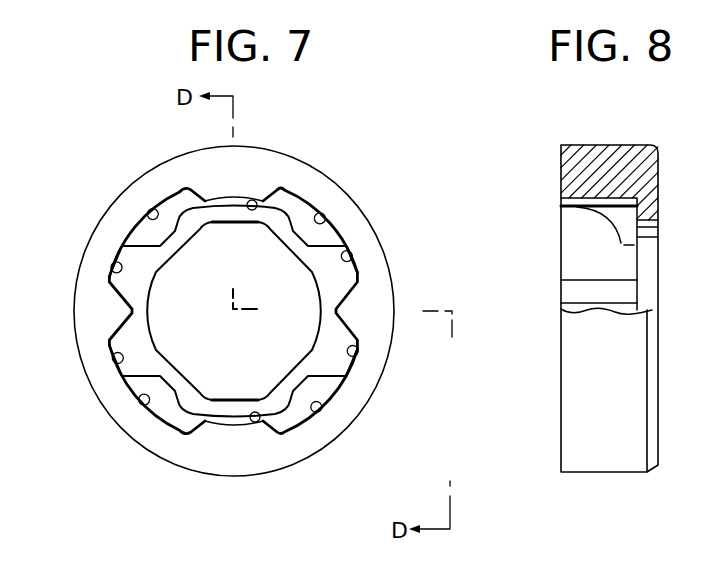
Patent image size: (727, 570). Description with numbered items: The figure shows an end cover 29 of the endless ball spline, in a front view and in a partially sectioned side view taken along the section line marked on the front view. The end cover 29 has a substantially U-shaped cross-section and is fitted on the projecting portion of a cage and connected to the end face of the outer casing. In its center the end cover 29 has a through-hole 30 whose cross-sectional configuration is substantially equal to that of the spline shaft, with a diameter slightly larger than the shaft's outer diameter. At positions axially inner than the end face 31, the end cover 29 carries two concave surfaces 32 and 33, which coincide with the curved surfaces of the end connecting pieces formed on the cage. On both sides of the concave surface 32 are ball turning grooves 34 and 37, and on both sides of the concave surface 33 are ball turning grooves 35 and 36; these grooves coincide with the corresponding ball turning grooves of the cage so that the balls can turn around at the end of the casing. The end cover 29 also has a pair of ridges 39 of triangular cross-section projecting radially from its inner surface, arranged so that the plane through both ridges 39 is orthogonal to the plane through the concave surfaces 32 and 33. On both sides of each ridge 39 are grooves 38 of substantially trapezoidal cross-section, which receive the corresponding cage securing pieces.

In FIG. 7, the end cover 29 is at (323, 170).
In FIG. 8, the end cover 29 is at (600, 143).
In FIG. 7, the through-hole 30 is at (282, 349).
In FIG. 7, the end face 31 is at (203, 180).
In FIG. 8, the end face 31 is at (561, 172).
In FIG. 7, the concave surface 32 is at (254, 201).
In FIG. 7, the concave surface 33 is at (256, 421).
In FIG. 7, the ball turning groove 34 is at (325, 218).
In FIG. 7, the ball turning groove 35 is at (318, 410).
In FIG. 7, the ball turning groove 36 is at (141, 403).
In FIG. 7, the ball turning groove 37 is at (153, 209).
In FIG. 8, the ball turning groove 37 is at (599, 209).
In FIG. 7, the groove 38 is at (112, 266).
In FIG. 7, the ridge 39 is at (130, 303).
In FIG. 8, the ridge 39 is at (568, 290).